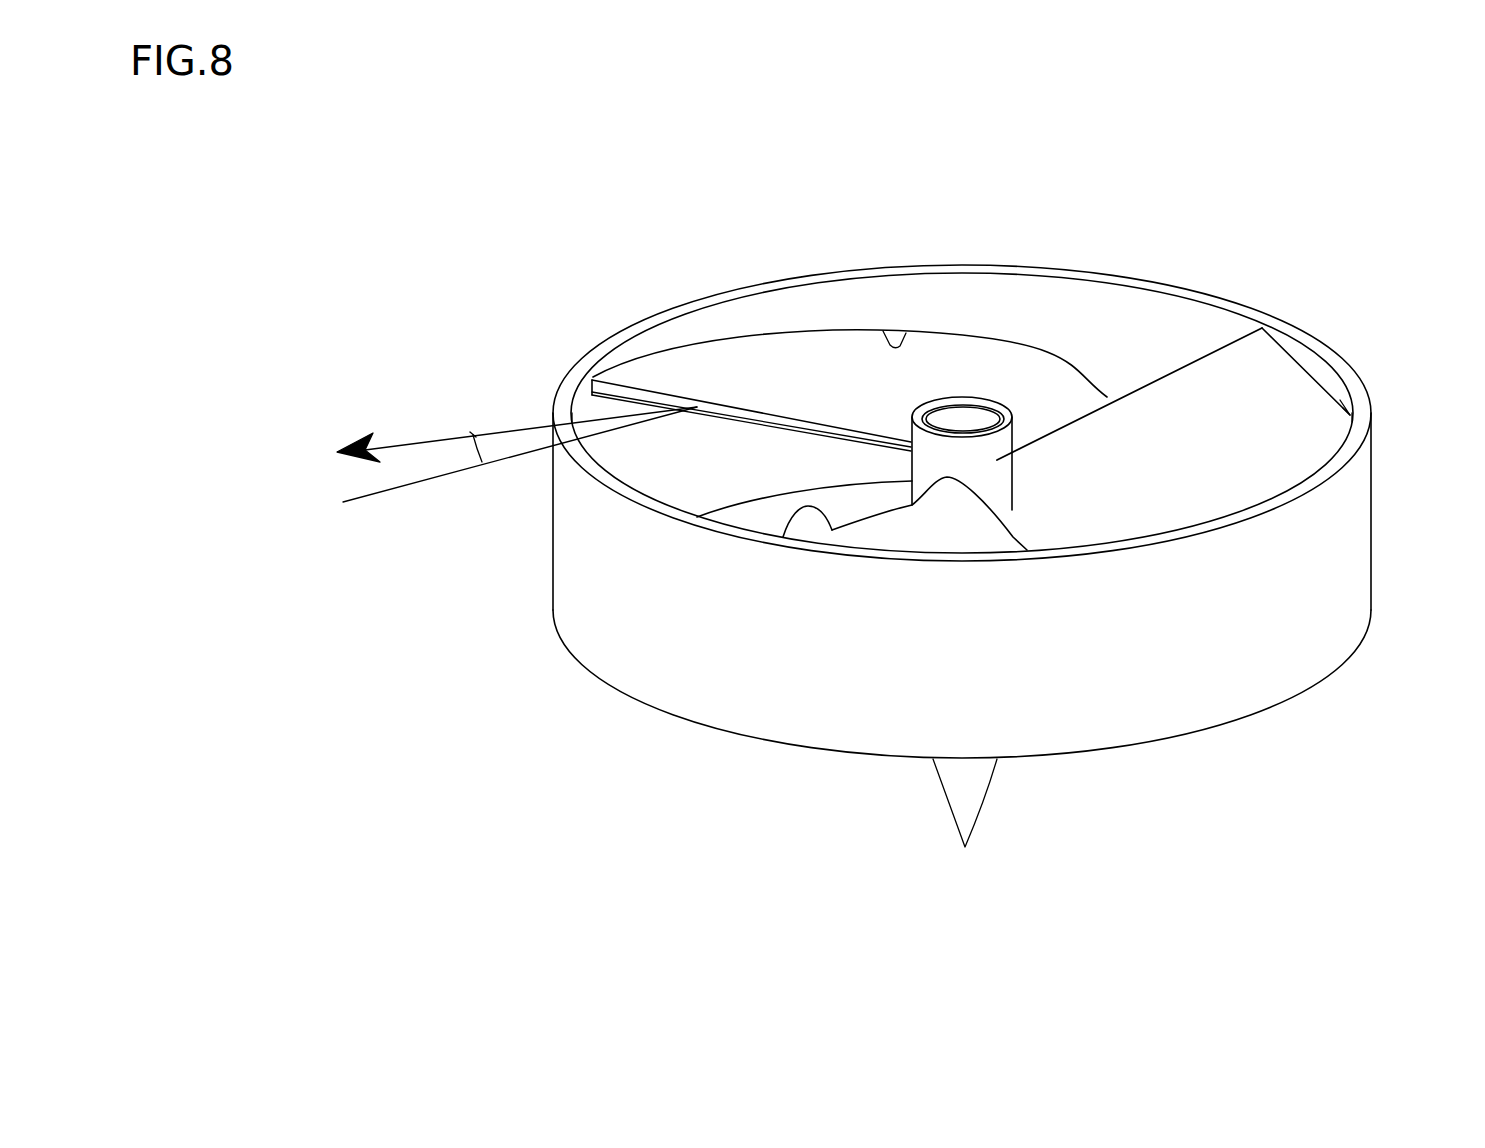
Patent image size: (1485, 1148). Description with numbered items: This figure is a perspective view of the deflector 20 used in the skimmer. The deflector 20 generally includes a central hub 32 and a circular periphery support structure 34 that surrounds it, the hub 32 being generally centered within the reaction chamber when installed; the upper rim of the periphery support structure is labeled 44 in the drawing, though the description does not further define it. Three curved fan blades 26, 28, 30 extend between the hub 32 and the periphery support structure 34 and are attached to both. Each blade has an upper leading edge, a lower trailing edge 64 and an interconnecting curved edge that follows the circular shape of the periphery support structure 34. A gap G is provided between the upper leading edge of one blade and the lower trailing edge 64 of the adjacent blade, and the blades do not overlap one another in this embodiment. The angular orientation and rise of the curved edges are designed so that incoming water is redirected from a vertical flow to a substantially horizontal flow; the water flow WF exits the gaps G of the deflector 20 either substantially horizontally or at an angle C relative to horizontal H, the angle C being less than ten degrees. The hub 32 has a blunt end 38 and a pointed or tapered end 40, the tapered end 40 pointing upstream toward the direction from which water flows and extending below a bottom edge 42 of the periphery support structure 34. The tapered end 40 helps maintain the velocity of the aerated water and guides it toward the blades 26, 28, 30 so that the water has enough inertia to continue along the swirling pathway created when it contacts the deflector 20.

The deflector 20 is at (1236, 241).
The curved fan blade 26 is at (1172, 514).
The curved fan blade 28 is at (968, 549).
The curved fan blade 30 is at (798, 381).
The central hub 32 is at (988, 462).
The periphery support structure 34 is at (707, 687).
The blunt end 38 is at (967, 400).
The tapered end 40 is at (967, 817).
The bottom edge 42 is at (1322, 680).
The rim 44 is at (1353, 365).
The lower trailing edge 64 is at (807, 507).
The gap G is at (834, 474).
The angle C is at (472, 434).
The horizontal H is at (520, 466).
The water flow WF is at (517, 434).